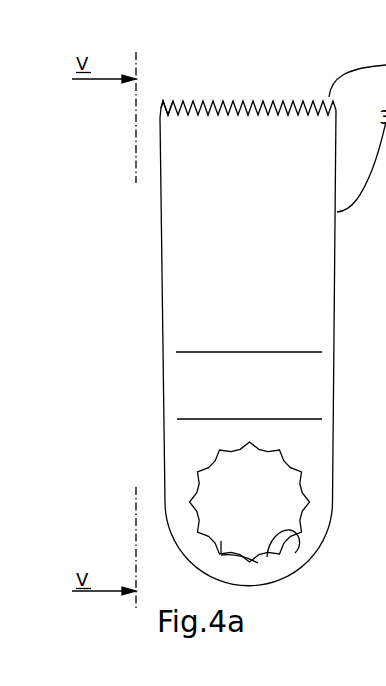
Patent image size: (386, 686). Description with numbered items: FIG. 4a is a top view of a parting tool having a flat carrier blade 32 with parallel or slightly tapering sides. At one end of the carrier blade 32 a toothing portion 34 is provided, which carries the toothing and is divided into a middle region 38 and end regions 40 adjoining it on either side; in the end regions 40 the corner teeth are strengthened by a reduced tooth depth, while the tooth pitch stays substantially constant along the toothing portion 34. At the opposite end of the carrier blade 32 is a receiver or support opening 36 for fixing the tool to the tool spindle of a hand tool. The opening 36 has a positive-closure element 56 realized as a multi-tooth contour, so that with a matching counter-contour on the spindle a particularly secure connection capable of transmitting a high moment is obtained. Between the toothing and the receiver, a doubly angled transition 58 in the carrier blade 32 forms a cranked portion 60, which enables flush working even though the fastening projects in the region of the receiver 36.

The carrier blade 32 is at (230, 269).
The toothing portion 34 is at (258, 137).
The receiver or support opening 36 is at (268, 558).
The middle region 38 is at (260, 97).
The end regions 40 is at (164, 100).
The positive-closure element 56 is at (258, 560).
The doubly angled transition 58 is at (223, 388).
The cranked portion 60 is at (385, 240).